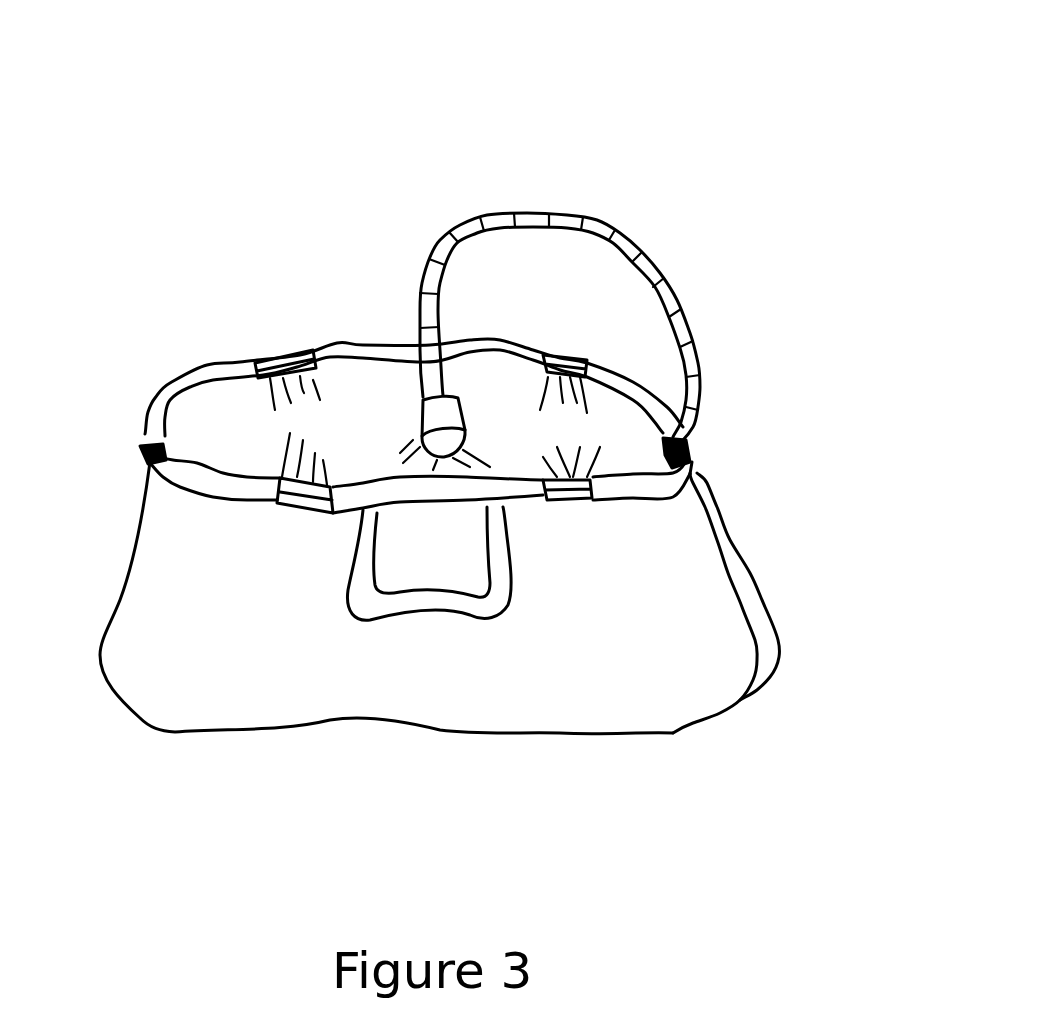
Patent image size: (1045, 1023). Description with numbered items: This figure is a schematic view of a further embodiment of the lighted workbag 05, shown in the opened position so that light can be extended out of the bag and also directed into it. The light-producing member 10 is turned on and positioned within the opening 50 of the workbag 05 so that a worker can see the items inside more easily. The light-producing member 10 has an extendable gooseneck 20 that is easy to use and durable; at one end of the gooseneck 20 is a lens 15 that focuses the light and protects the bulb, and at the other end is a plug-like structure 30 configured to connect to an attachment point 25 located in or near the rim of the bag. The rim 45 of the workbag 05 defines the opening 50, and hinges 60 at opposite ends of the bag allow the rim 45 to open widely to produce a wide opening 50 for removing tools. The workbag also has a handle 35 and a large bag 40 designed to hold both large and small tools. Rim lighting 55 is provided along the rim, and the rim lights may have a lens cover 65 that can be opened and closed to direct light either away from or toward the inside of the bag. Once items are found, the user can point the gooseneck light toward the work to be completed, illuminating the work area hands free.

The lighted workbag 05 is at (334, 124).
The light-producing member 10 is at (423, 410).
The lens 15 is at (466, 427).
The extendable gooseneck 20 is at (641, 242).
The attachment point 25 is at (693, 462).
The plug-like structure 30 is at (688, 452).
The handle 35 is at (476, 616).
The large bag 40 is at (657, 723).
The rim 45 is at (188, 480).
The opening 50 is at (217, 423).
The rim lighting 55 is at (253, 370).
The hinges 60 is at (148, 453).
The lens cover 65 is at (302, 350).